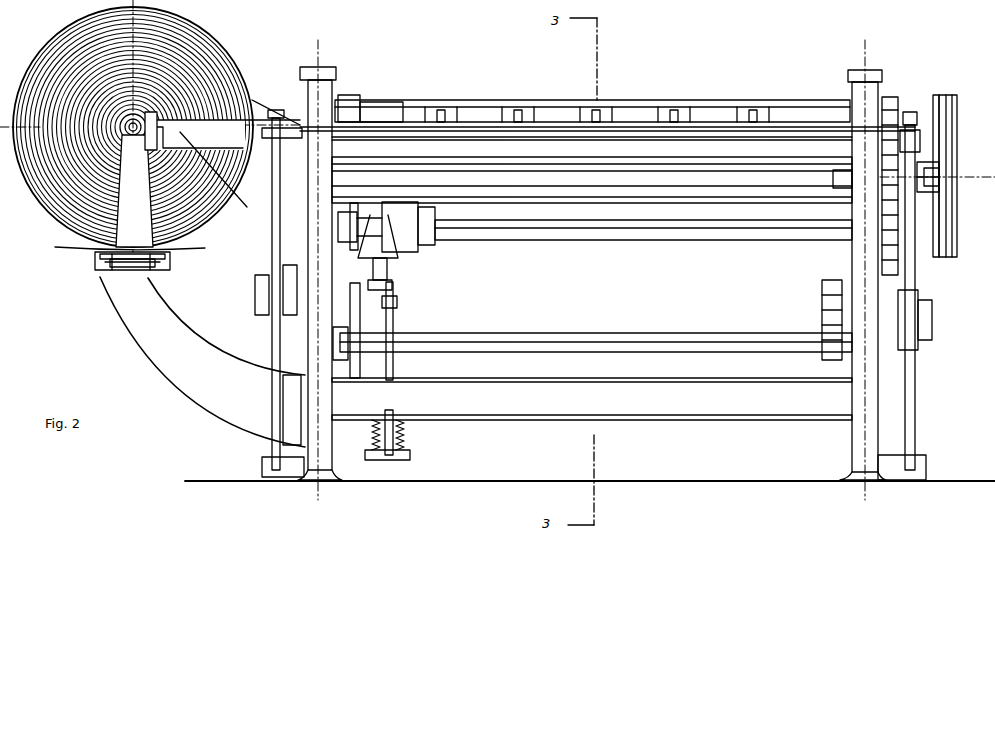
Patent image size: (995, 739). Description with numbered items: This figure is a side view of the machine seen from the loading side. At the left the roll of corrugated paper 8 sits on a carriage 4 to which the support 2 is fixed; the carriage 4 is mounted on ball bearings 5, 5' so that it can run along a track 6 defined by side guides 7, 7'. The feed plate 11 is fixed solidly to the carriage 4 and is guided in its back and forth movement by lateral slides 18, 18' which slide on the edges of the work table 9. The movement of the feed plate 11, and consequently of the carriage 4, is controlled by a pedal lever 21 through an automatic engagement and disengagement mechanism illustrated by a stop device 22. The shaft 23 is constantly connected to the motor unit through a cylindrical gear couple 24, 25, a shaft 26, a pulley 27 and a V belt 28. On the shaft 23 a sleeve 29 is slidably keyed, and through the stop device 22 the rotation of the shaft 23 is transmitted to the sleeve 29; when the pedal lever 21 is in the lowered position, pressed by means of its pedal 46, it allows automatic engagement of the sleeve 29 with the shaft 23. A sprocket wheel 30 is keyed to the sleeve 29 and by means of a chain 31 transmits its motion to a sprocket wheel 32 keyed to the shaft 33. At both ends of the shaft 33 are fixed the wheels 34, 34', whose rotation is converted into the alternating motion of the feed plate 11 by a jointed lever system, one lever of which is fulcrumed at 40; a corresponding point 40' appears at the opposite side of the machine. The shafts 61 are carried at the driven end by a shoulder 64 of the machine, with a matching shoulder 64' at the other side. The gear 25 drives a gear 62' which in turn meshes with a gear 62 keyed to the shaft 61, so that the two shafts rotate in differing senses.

The support 2 is at (140, 190).
The carriage 4 is at (120, 256).
The ball bearing 5 is at (167, 269).
The ball bearing 5' is at (104, 274).
The track 6 is at (100, 270).
The side guide 7 is at (187, 274).
The side guide 7' is at (80, 265).
The paper roll 8 is at (250, 97).
The work table 9 is at (488, 128).
The feed plate 11 is at (465, 125).
The lateral slide 18 is at (920, 257).
The lateral slide 18' is at (263, 290).
The pedal lever 21 is at (398, 437).
The stop device 22 is at (370, 250).
The shaft 23 is at (512, 232).
The cylindrical gear 24 is at (940, 220).
The cylindrical gear 25 is at (928, 178).
The shaft 26 is at (932, 164).
The pulley 27 is at (936, 172).
The V belt 28 is at (945, 192).
The sleeve 29 is at (417, 250).
The sprocket wheel 30 is at (365, 256).
The chain 31 is at (378, 262).
The sprocket wheel 32 is at (360, 374).
The shaft 33 is at (425, 337).
The wheel 34 is at (888, 345).
The wheel 34' is at (257, 355).
The fulcrum 40 is at (916, 446).
The foot 40' is at (266, 457).
The pedal 46 is at (405, 453).
The shaft 61 is at (385, 108).
The gear 62 is at (897, 160).
The gear 62' is at (941, 133).
The shoulder 64 is at (864, 270).
The column 64' is at (352, 270).